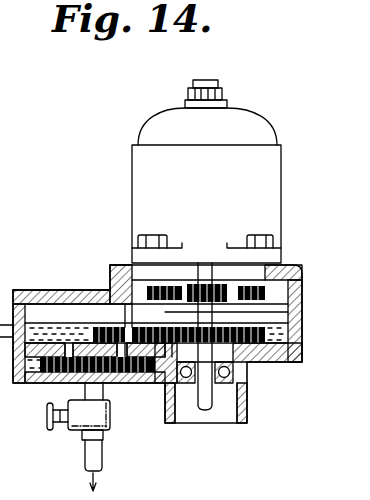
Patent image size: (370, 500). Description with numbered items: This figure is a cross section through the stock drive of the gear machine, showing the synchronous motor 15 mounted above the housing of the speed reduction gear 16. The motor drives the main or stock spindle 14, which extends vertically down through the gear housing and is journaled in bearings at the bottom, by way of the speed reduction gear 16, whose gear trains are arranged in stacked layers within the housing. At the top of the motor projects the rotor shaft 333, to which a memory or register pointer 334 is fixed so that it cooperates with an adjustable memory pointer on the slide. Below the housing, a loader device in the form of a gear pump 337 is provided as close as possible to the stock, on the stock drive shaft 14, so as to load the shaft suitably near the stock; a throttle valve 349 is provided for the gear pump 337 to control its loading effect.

The main or stock spindle 14 is at (200, 398).
The synchronous motor 15 is at (143, 190).
The speed reduction gear 16 is at (147, 288).
The rotor shaft 333 is at (200, 80).
The memory pointer 334 is at (222, 91).
The gear pump 337 is at (44, 387).
The throttle valve 349 is at (77, 425).